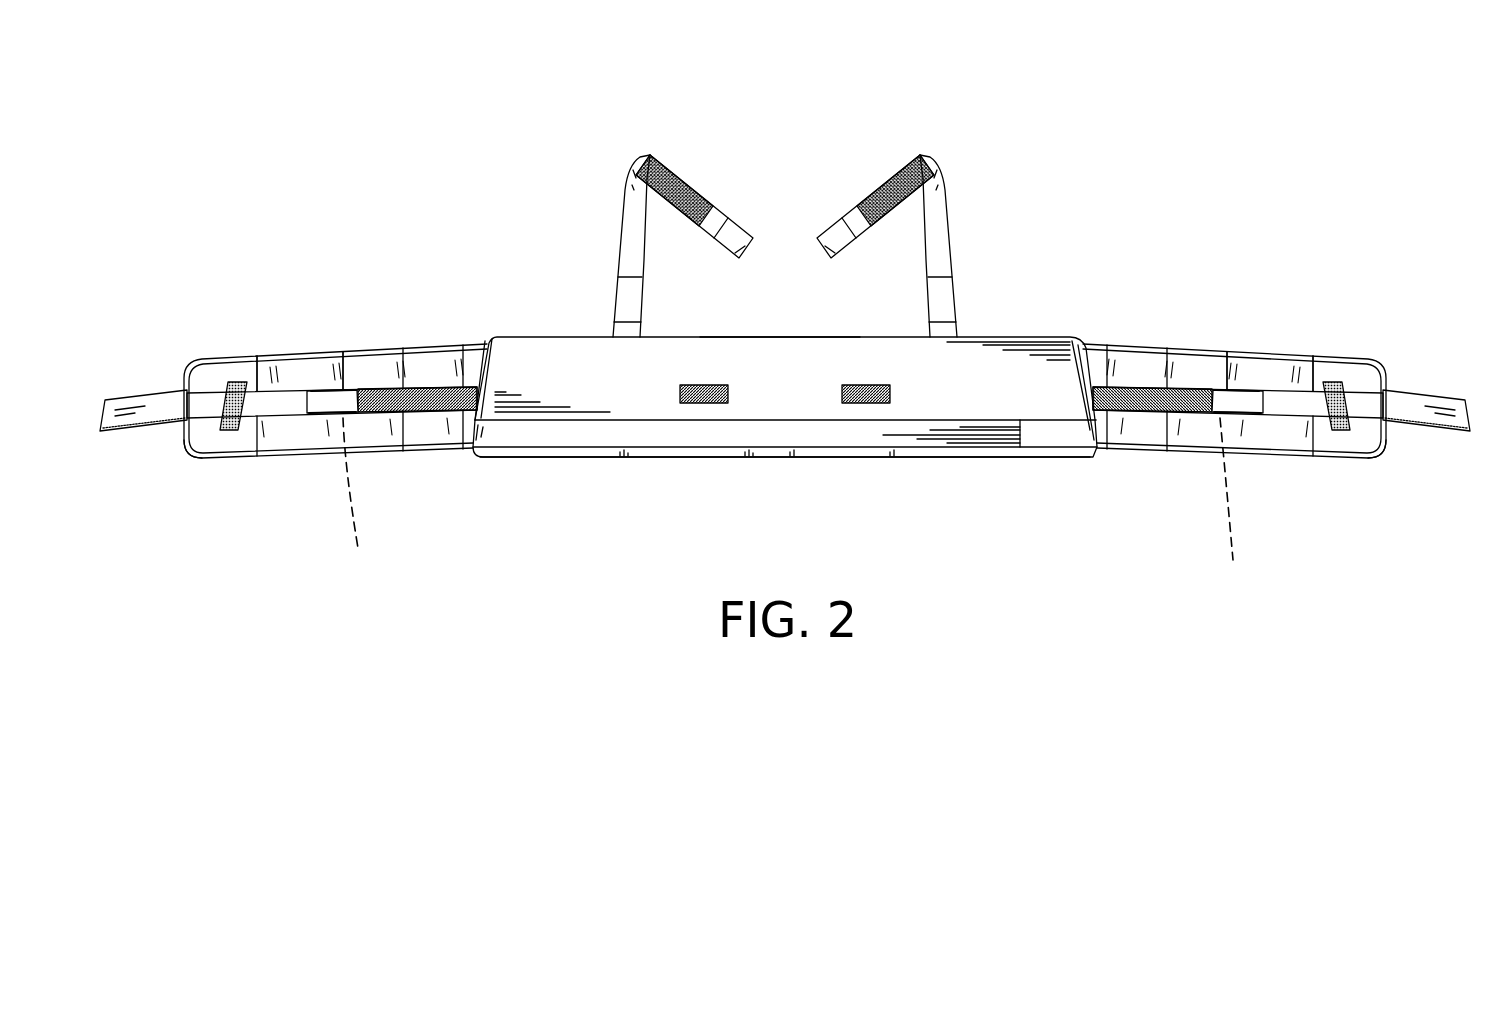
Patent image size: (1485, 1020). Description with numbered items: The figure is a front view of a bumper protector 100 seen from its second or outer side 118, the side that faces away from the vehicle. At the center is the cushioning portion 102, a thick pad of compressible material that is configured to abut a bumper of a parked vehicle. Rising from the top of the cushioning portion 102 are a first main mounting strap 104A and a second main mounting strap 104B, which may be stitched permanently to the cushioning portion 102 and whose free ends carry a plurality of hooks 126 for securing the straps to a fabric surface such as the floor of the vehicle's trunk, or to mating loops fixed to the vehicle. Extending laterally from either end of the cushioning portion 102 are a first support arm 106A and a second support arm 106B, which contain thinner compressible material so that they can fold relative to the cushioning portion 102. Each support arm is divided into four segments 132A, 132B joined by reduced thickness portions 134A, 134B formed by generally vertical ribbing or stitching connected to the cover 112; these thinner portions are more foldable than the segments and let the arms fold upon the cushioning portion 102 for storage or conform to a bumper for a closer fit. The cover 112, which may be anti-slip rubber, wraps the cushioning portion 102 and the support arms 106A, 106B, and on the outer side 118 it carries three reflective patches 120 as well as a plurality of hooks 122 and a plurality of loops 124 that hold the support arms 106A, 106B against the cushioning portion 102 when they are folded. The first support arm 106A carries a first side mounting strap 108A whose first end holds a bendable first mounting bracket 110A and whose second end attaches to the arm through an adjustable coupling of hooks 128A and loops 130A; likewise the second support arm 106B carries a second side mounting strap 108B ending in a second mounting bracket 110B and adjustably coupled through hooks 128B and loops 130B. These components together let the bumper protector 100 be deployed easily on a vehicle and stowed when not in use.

The bumper protector 100 is at (458, 201).
The cushioning portion 102 is at (738, 337).
The first main mounting strap 104A is at (619, 241).
The second main mounting strap 104B is at (946, 221).
The first support arm 106A is at (361, 370).
The second support arm 106B is at (1190, 370).
The first side mounting strap 108A is at (296, 386).
The second side mounting strap 108B is at (1274, 386).
The first mounting bracket 110A is at (139, 397).
The second mounting bracket 110B is at (1418, 397).
The cover 112 is at (783, 337).
The outer side 118 is at (900, 362).
The reflective patches 120 is at (200, 443).
The hooks 122 is at (705, 385).
The loops 124 is at (225, 433).
The hooks 126 is at (690, 183).
The hooks 128A is at (355, 497).
The hooks 128B is at (1237, 503).
The loops 130A is at (432, 424).
The loops 130B is at (1138, 424).
The segments 132A is at (256, 374).
The segments 132B is at (1131, 375).
The reduced thickness portions 134A is at (302, 420).
The reduced thickness portions 134B is at (1178, 438).